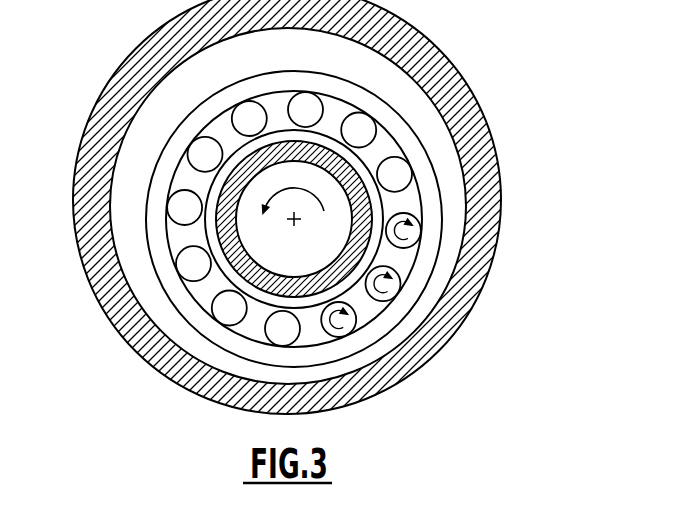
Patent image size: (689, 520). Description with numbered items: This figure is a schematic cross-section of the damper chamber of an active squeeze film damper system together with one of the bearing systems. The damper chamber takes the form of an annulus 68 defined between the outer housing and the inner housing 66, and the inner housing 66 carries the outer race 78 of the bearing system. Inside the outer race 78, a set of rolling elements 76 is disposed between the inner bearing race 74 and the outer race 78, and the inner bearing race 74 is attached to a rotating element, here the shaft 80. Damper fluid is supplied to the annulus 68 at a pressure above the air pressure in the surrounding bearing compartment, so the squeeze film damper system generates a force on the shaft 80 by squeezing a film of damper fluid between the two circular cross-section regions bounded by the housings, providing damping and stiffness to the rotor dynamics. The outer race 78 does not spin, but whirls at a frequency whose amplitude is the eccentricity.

The inner housing 66 is at (408, 402).
The annulus 68 is at (124, 235).
The inner bearing race 74 is at (347, 229).
The rolling element 76 is at (407, 172).
The outer race 78 is at (446, 211).
The shaft 80 is at (356, 292).